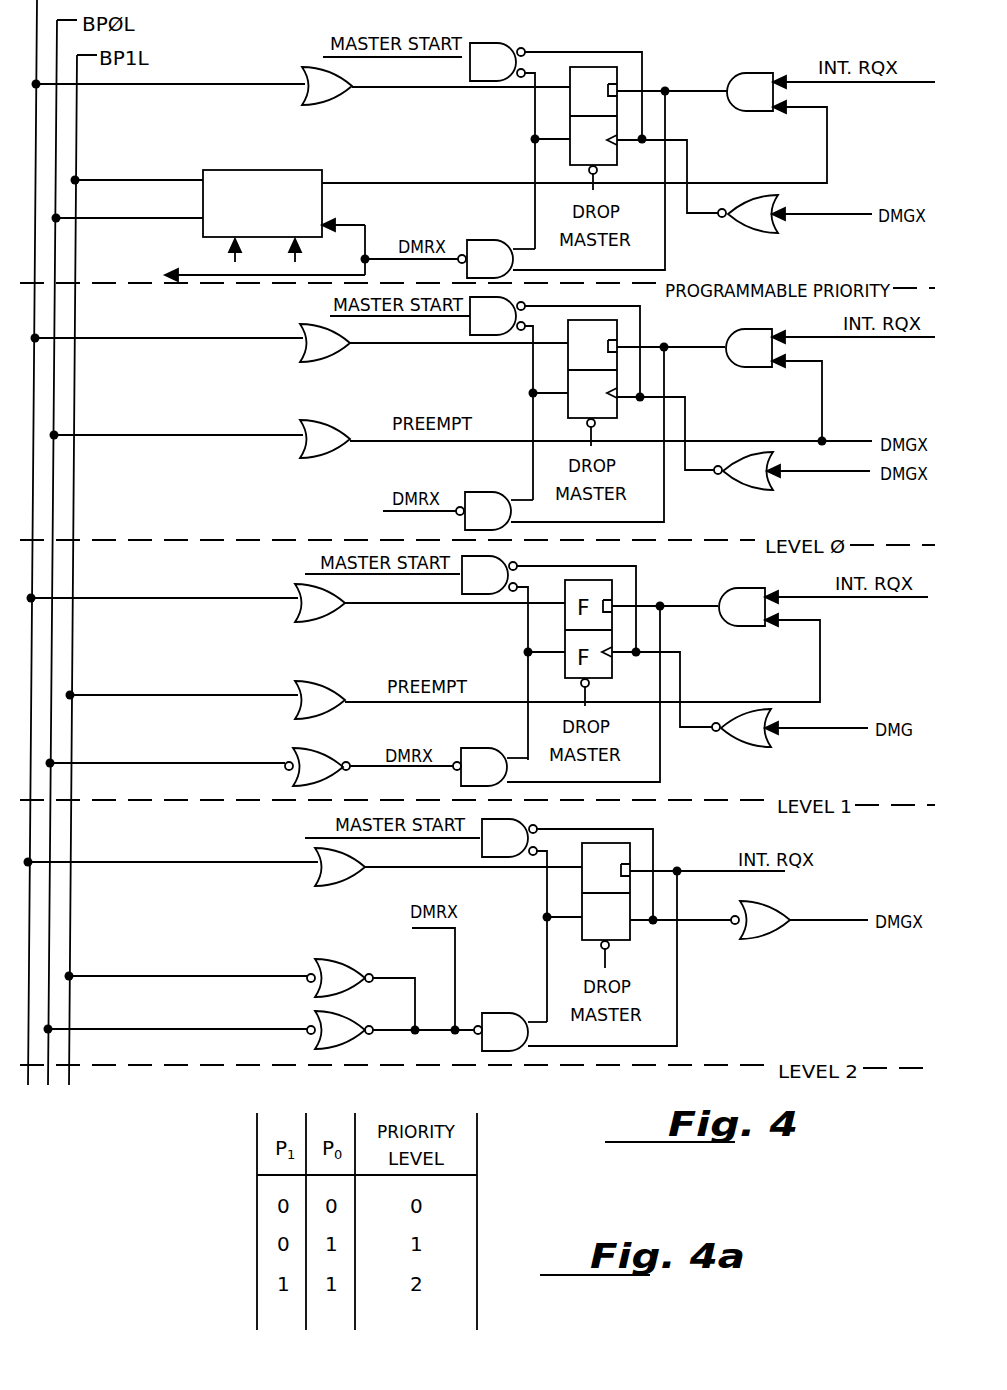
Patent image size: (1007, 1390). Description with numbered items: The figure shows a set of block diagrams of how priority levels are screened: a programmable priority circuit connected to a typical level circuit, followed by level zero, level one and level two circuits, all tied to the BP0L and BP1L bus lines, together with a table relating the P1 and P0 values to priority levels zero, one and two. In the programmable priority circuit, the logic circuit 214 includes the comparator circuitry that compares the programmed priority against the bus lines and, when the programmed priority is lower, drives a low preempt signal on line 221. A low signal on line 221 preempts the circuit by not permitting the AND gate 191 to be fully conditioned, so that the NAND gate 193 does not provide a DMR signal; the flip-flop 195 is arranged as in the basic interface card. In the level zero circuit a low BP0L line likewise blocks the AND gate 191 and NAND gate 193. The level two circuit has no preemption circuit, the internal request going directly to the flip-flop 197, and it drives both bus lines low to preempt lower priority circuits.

The AND gate 191 is at (738, 80).
The NAND gate 193 is at (490, 243).
The flip-flop 195 is at (600, 66).
The flip-flop 197 is at (633, 853).
The logic circuit 214 is at (318, 171).
The line 221 is at (422, 182).